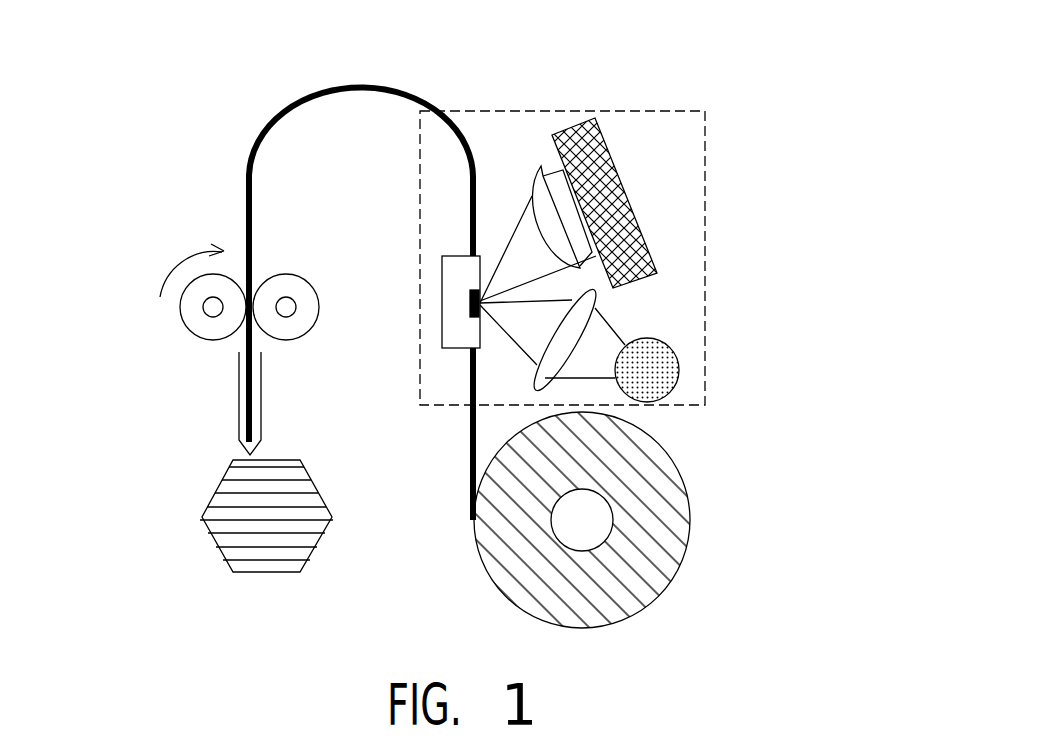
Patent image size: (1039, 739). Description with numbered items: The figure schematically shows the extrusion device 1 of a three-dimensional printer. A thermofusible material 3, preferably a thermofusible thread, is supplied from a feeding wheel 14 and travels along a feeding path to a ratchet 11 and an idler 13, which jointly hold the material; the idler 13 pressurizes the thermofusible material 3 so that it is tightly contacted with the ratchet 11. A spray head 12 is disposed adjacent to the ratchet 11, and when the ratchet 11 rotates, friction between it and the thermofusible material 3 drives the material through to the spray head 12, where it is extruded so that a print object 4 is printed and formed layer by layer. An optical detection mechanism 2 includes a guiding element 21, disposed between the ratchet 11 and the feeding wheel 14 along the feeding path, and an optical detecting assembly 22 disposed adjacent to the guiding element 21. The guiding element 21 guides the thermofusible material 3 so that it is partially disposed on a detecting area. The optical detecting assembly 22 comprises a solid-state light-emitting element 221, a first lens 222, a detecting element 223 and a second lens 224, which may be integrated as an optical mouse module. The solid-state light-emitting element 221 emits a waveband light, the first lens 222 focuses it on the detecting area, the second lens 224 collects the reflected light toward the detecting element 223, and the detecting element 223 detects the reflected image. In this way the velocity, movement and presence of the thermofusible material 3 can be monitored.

The extrusion device 1 is at (1018, 72).
The optical detection mechanism 2 is at (598, 111).
The thermofusible material 3 is at (359, 84).
The print object 4 is at (266, 573).
The ratchet 11 is at (212, 340).
The spray head 12 is at (245, 452).
The idler 13 is at (320, 298).
The feeding wheel 14 is at (635, 480).
The guiding element 21 is at (462, 349).
The optical detecting assembly 22 is at (666, 260).
The solid-state light-emitting element 221 is at (645, 368).
The first lens 222 is at (583, 312).
The detecting element 223 is at (620, 187).
The second lens 224 is at (555, 230).